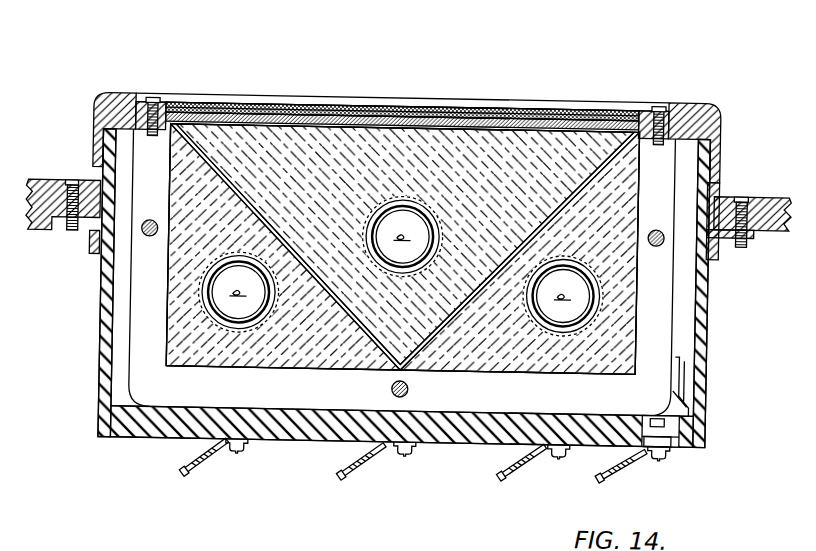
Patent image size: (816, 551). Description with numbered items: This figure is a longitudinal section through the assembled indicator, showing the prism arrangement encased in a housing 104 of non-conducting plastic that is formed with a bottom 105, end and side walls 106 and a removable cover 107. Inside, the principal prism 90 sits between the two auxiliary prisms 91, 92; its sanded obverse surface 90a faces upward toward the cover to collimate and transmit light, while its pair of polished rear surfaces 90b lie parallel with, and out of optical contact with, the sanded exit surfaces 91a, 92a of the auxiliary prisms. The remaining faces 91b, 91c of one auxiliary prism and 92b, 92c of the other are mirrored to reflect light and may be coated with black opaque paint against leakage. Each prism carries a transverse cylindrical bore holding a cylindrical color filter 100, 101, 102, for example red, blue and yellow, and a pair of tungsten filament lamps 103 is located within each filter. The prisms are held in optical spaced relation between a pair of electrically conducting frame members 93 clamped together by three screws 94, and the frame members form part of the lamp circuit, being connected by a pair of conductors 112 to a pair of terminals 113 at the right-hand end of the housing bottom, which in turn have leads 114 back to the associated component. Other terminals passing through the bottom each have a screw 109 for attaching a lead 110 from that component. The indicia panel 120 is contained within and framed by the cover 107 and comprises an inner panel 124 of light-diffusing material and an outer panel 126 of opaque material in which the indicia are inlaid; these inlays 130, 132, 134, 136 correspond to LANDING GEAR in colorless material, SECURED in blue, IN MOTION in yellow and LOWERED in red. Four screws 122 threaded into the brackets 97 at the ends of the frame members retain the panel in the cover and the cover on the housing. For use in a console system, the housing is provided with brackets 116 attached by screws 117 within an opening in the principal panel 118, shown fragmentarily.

The indicia panel 120 is at (261, 76).
The screws 122 is at (141, 106).
The indicia inlay 136 is at (189, 108).
The removable cover 107 is at (94, 112).
The screws 117 is at (75, 188).
The brackets 97 is at (135, 135).
The screws 94 is at (149, 224).
The auxiliary prism 91 is at (208, 220).
The indicia inlay 134 is at (296, 109).
The inner panel 124 is at (376, 120).
The indicia inlay 132 is at (432, 111).
The outer panel 126 is at (499, 113).
The indicia inlay 130 is at (588, 108).
The obverse surface 90a is at (482, 130).
The principal prism 90 is at (331, 180).
The cylindrical color filter 100 is at (423, 202).
The principal panel 118 is at (770, 195).
The auxiliary prism 92 is at (611, 220).
The brackets 116 is at (89, 249).
The end and side walls 106 is at (100, 310).
The mirrored face 91b is at (169, 339).
The cylindrical color filter 101 is at (217, 263).
The mirrored face 91c is at (215, 373).
The rear surfaces 90b is at (263, 242).
The tungsten filament lamps 103 is at (415, 250).
The exit surface 91a is at (343, 311).
The exit surface 92a is at (467, 301).
The cylindrical color filter 102 is at (586, 260).
The mirrored face 92b is at (637, 341).
The conductors 112 is at (686, 388).
The frame members 93 is at (297, 400).
The mirrored face 92c is at (527, 369).
The housing 104 is at (131, 448).
The leads 110 is at (196, 462).
The screws 109 is at (233, 454).
The bottom 105 is at (313, 444).
The leads 114 is at (633, 461).
The terminals 113 is at (664, 437).